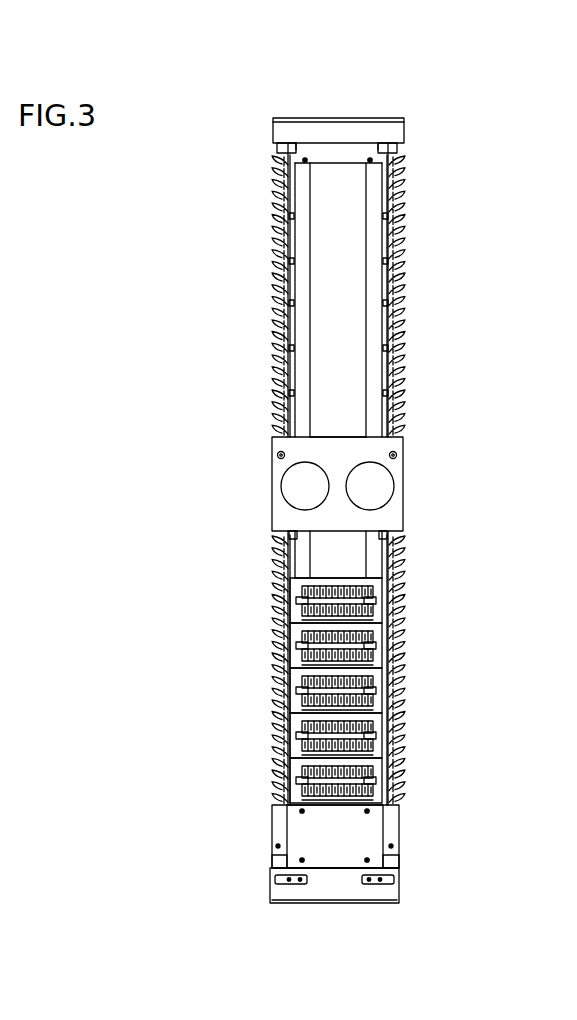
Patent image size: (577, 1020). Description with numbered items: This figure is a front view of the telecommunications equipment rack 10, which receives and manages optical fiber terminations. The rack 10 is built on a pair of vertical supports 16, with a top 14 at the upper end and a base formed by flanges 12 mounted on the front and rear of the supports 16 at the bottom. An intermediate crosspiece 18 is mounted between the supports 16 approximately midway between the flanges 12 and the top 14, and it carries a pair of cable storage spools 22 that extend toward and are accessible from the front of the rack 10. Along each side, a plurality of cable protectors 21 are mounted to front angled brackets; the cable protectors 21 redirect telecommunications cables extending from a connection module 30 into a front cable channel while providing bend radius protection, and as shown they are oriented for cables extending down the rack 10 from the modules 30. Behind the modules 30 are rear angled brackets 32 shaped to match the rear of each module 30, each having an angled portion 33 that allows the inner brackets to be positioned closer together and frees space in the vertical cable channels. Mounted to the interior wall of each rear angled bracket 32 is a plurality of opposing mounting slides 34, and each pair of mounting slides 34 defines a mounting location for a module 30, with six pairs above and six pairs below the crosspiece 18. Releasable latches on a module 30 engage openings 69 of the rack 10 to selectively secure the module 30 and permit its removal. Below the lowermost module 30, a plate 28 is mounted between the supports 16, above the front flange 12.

The telecommunications equipment rack 10 is at (158, 232).
The flanges 12 is at (330, 882).
The top 14 is at (305, 135).
The vertical supports 16 is at (276, 150).
The intermediate crosspiece 18 is at (296, 447).
The cable protectors 21 is at (277, 212).
The cable storage spools 22 is at (296, 483).
The plate 28 is at (320, 830).
The connection module 30 is at (300, 588).
The rear angled brackets 32 is at (300, 252).
The angled portion 33 is at (370, 250).
The mounting slides 34 is at (290, 533).
The openings 69 is at (378, 370).